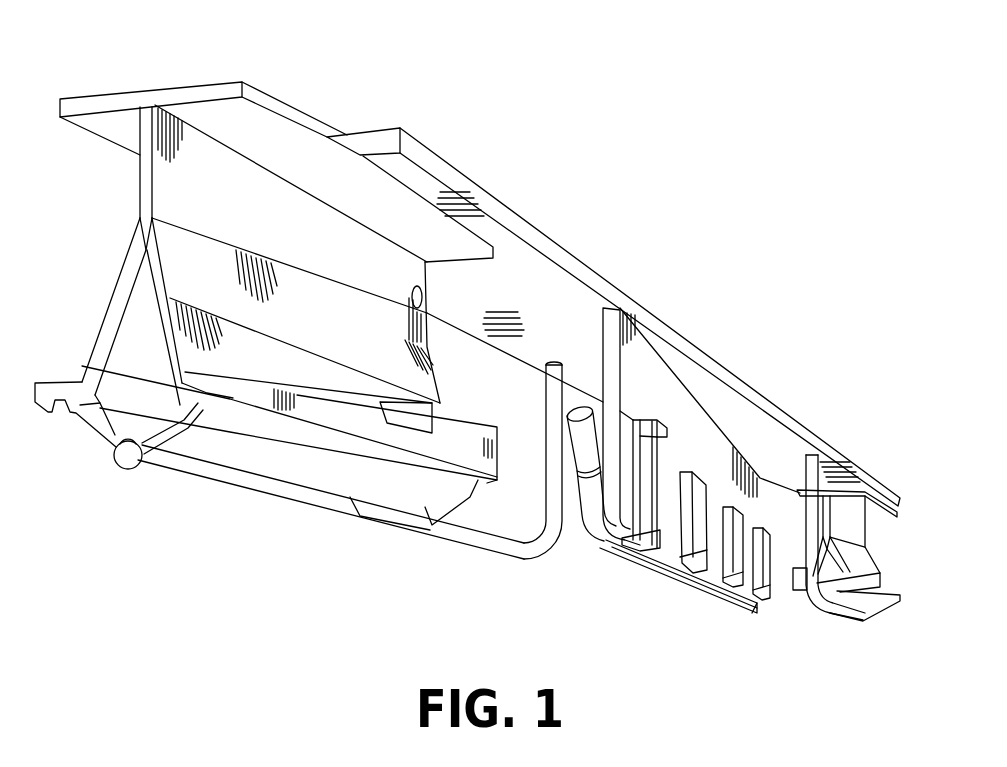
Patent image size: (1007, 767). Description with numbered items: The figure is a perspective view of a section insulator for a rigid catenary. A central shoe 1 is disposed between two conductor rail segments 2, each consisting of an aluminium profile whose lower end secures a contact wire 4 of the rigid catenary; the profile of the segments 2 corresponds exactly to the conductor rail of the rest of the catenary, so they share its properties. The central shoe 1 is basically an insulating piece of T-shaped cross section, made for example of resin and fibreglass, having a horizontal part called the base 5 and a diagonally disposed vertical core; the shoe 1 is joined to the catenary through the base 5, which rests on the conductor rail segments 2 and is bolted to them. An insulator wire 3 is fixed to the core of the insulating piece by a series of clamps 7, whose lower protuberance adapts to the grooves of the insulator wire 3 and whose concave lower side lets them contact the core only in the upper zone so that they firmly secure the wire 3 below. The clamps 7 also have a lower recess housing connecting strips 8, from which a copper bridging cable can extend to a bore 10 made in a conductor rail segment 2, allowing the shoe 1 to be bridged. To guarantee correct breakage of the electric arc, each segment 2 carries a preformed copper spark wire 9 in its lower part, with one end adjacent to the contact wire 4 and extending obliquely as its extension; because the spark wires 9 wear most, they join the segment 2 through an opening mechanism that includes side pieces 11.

The central shoe 1 is at (632, 238).
The conductor rail segments 2 is at (251, 202).
The insulator wire 3 is at (698, 580).
The contact wire 4 is at (227, 478).
The base 5 is at (534, 293).
The clamps 7 is at (738, 510).
The connecting strips 8 is at (648, 421).
The spark wires 9 is at (812, 548).
The bore 10 is at (421, 287).
The side pieces 11 is at (453, 432).